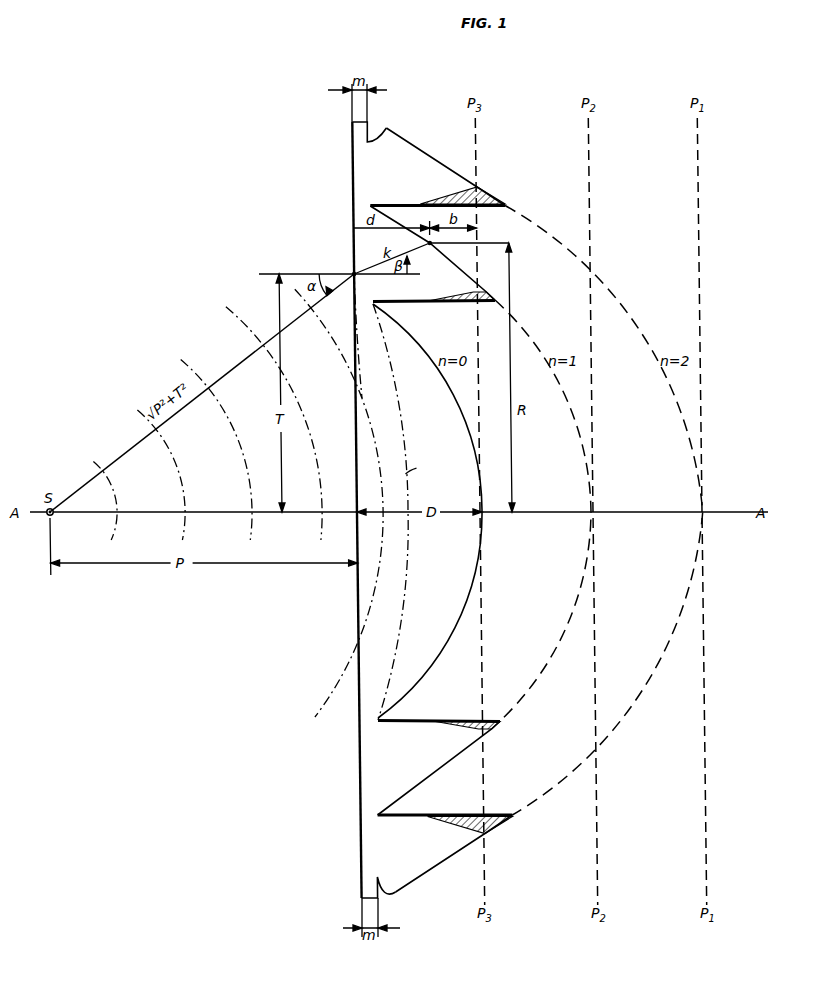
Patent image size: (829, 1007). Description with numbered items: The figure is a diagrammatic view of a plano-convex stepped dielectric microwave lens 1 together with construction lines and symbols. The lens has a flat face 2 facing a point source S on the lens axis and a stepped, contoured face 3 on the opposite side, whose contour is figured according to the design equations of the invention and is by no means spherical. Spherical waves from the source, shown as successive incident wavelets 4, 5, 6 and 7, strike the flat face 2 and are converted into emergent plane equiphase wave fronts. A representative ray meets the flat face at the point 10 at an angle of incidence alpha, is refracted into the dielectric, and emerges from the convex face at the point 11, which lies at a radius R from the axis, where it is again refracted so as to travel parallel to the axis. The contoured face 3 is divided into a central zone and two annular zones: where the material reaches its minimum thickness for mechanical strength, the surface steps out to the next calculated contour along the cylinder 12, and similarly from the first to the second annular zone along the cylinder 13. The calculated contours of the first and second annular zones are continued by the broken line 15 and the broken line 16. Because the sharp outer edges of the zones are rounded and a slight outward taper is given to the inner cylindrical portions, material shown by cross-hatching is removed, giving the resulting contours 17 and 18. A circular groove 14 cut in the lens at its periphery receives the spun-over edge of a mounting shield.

The plano-convex stepped dielectric microwave lens 1 is at (370, 692).
The flat face 2 is at (357, 594).
The stepped, contoured face 3 is at (436, 654).
The incident wavelet 4 is at (145, 420).
The incident wavelet 5 is at (200, 384).
The incident wavelet 6 is at (261, 347).
The incident wavelet 7 is at (310, 303).
The point of entry 10 is at (351, 271).
The point of emergence 11 is at (429, 248).
The cylinder 12 is at (431, 306).
The cylinder 13 is at (485, 207).
The circular groove 14 is at (382, 129).
The broken line 15 is at (552, 652).
The broken line 16 is at (621, 720).
The resulting contour 17 is at (455, 297).
The resulting contour 18 is at (433, 201).